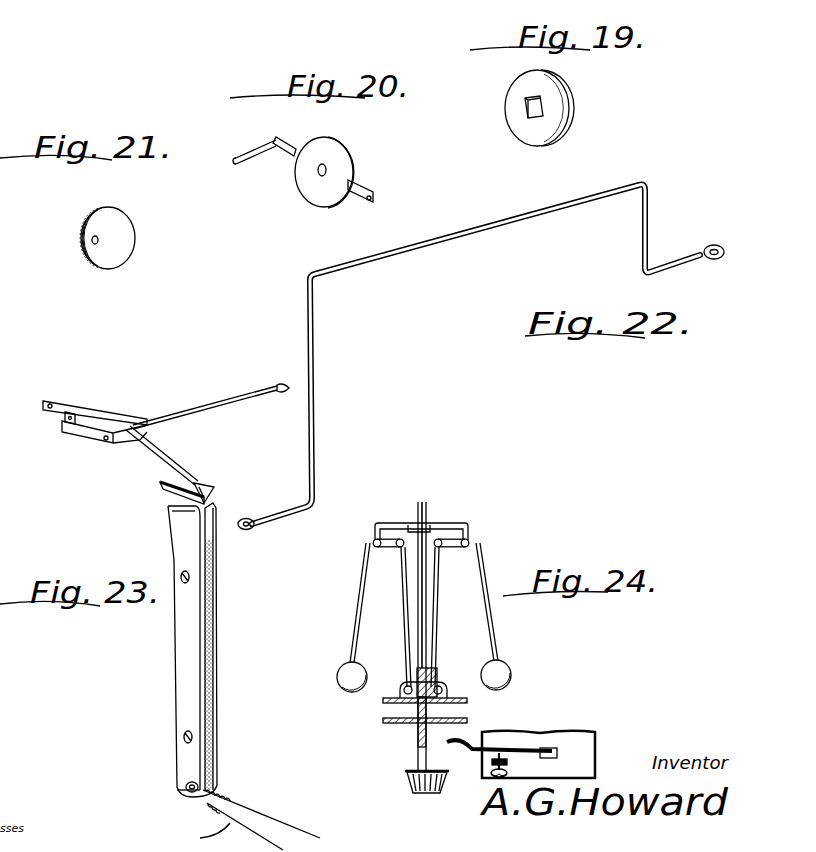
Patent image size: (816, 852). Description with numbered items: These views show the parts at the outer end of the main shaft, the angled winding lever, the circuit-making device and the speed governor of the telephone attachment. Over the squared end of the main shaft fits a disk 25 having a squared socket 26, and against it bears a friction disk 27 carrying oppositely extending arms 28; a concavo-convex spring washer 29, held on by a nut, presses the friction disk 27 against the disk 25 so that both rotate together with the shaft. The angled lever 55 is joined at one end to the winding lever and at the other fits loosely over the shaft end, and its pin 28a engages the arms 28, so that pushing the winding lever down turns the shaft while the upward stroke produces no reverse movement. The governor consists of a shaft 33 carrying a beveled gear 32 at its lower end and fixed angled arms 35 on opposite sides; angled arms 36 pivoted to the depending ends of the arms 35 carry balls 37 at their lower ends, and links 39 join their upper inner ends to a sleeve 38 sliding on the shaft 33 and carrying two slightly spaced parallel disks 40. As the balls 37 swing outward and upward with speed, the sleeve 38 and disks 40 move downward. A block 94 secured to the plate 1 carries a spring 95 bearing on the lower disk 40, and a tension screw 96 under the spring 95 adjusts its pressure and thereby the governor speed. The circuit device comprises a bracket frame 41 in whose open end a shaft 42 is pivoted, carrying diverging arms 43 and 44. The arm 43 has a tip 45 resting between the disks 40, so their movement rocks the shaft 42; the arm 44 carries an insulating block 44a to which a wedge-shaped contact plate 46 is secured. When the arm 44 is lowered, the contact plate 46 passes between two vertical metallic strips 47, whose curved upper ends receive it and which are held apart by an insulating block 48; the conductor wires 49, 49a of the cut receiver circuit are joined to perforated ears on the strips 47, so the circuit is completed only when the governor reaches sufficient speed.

In FIG. 19, the disk 25 is at (512, 101).
In FIG. 19, the squared socket 26 is at (545, 106).
In FIG. 20, the friction disk 27 is at (313, 182).
In FIG. 20, the arms 28 is at (290, 157).
In FIG. 20, the pin 28a is at (275, 150).
In FIG. 21, the concavo convex spring washer 29 is at (92, 228).
In FIG. 22, the angled lever 55 is at (500, 226).
In FIG. 23, the bracket frame 41 is at (87, 412).
In FIG. 23, the shaft 42 is at (118, 441).
In FIG. 23, the arm 43 is at (204, 409).
In FIG. 23, the arm 44 is at (168, 458).
In FIG. 23, the block of insulating material 44a is at (203, 481).
In FIG. 23, the tip 45 is at (280, 381).
In FIG. 23, the wedge-shaped contact plate 46 is at (175, 492).
In FIG. 23, the metallic strips 47 is at (216, 575).
In FIG. 23, the block of insulating material 48 is at (210, 667).
In FIG. 23, the conductor wire 49 is at (275, 812).
In FIG. 23, the conductor wire 49a is at (200, 839).
In FIG. 24, the shaft 33 is at (428, 506).
In FIG. 24, the fixed angled arms 35 is at (387, 523).
In FIG. 24, the angled arms 36 is at (355, 582).
In FIG. 24, the balls 37 is at (336, 673).
In FIG. 24, the sleeve 38 is at (436, 673).
In FIG. 24, the links 39 is at (406, 612).
In FIG. 24, the parallel disks 40 is at (383, 703).
In FIG. 24, the beveled gear 32 is at (408, 787).
In FIG. 24, the plate 1 is at (577, 733).
In FIG. 24, the block 94 is at (557, 752).
In FIG. 24, the spring 95 is at (477, 745).
In FIG. 24, the tension screw 96 is at (490, 762).